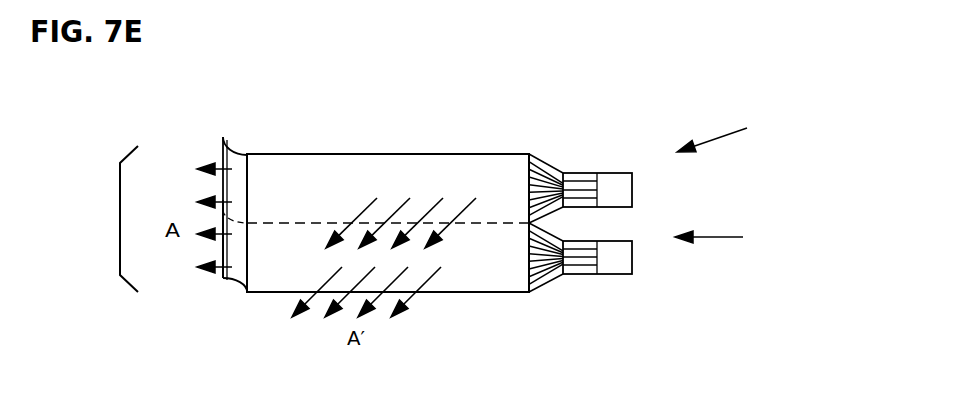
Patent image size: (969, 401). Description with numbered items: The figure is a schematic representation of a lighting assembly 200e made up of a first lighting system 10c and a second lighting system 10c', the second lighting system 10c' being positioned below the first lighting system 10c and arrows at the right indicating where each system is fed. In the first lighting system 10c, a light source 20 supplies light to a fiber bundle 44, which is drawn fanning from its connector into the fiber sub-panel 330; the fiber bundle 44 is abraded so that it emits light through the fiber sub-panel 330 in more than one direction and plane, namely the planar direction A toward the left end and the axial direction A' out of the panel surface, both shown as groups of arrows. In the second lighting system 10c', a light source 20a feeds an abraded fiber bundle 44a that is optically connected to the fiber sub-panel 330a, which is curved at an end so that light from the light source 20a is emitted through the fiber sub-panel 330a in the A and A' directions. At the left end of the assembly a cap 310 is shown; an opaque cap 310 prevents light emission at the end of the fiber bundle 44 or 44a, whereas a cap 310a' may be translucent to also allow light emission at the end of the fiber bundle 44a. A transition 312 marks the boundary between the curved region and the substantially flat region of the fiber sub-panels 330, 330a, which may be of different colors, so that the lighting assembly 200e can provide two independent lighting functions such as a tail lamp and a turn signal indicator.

The lighting assembly 200e is at (120, 215).
The cap 310 is at (224, 136).
The cap 310a' is at (178, 281).
The transition 312 is at (247, 294).
The fiber sub-panel 330 is at (393, 152).
The fiber sub-panel 330a is at (510, 293).
The fiber bundle 44 is at (548, 162).
The fiber bundle 44a is at (545, 286).
The light source 20 is at (632, 172).
The light source 20a is at (632, 275).
The first lighting system 10c is at (736, 135).
The second lighting system 10c' is at (736, 243).